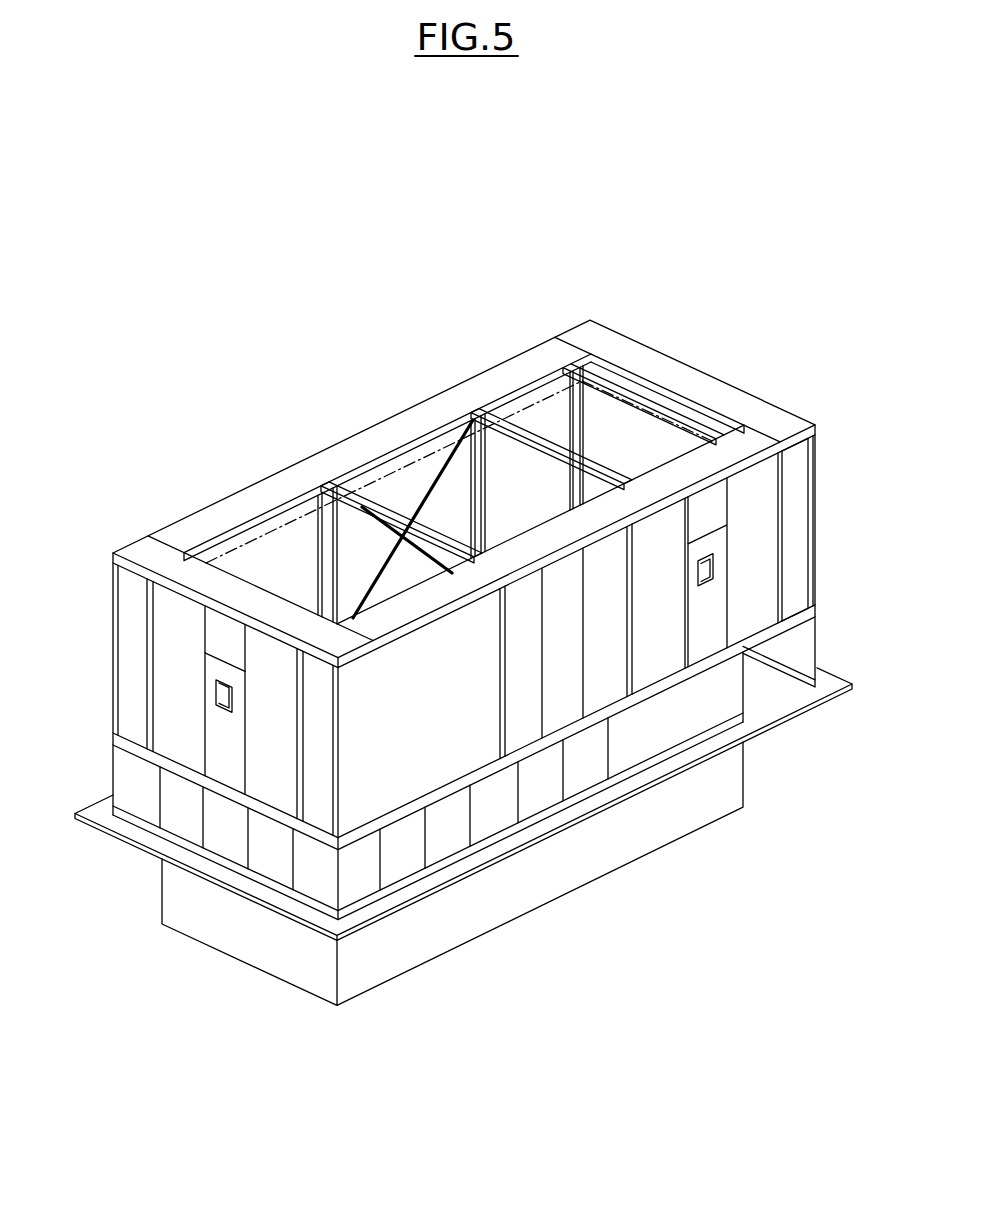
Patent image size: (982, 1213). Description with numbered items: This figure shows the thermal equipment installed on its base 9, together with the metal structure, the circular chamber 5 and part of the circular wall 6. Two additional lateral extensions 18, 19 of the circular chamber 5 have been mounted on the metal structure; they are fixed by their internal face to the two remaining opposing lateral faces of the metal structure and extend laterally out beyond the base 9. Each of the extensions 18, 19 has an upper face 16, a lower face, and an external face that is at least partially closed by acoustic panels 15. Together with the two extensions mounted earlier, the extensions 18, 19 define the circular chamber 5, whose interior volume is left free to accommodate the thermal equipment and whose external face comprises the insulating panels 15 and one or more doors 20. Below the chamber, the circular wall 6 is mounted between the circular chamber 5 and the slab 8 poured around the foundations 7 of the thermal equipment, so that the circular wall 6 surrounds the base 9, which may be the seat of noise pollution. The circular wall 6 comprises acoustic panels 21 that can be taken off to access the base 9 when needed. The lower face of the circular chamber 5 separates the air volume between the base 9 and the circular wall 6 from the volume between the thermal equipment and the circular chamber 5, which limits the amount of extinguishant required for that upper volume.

The circular chamber 5 is at (557, 330).
The circular wall 6 is at (110, 766).
The foundations 7 is at (372, 985).
The slab 8 is at (822, 680).
The base 9 is at (730, 695).
The acoustic panels 15 is at (808, 515).
The upper face 16 is at (141, 547).
The extension 18 is at (745, 388).
The extension 19 is at (108, 603).
The door 20 is at (712, 608).
The acoustic panels 21 is at (594, 775).